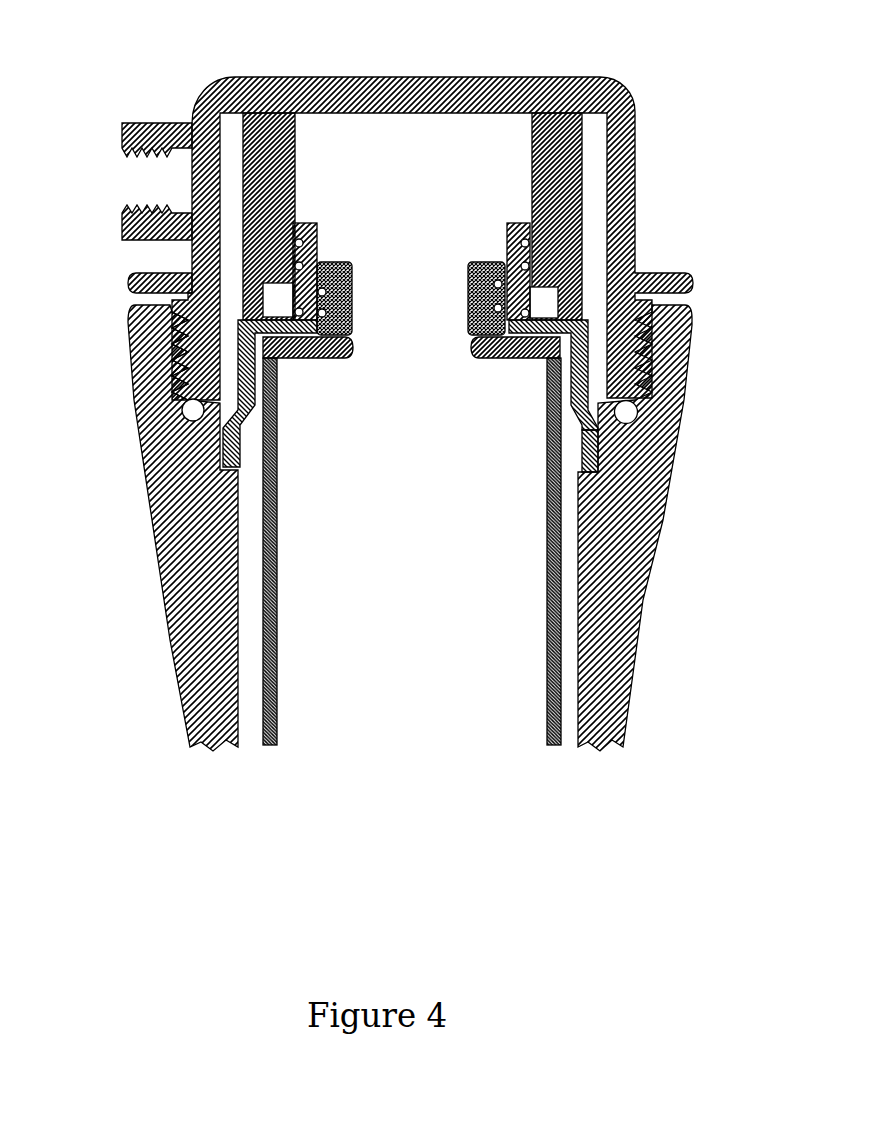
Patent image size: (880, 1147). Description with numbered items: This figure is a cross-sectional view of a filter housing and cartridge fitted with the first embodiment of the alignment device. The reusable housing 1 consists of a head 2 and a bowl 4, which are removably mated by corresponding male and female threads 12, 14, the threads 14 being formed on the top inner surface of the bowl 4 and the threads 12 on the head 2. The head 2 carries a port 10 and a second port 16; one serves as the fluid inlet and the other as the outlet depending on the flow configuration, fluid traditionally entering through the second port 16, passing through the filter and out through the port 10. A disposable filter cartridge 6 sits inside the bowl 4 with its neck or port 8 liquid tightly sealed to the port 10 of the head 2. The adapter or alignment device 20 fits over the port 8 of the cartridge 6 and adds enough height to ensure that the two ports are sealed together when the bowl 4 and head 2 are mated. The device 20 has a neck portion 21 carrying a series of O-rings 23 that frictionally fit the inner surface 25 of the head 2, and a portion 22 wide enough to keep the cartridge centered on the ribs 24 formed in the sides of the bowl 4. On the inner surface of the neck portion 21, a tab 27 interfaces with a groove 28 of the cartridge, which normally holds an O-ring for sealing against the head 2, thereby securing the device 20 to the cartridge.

The housing 1 is at (678, 413).
The head 2 is at (553, 80).
The bowl 4 is at (147, 388).
The filter cartridge 6 is at (277, 598).
The port 8 is at (470, 300).
The port 10 is at (413, 216).
The threads 12 is at (185, 308).
The threads 14 is at (185, 333).
The second port 16 is at (153, 182).
The alignment device 20 is at (280, 412).
The neck portion 21 is at (507, 253).
The portion 22 is at (575, 442).
The O-rings 23 is at (510, 227).
The ribs 24 is at (590, 447).
The inner surface 25 is at (532, 178).
The tab 27 is at (472, 263).
The groove 28 is at (518, 333).